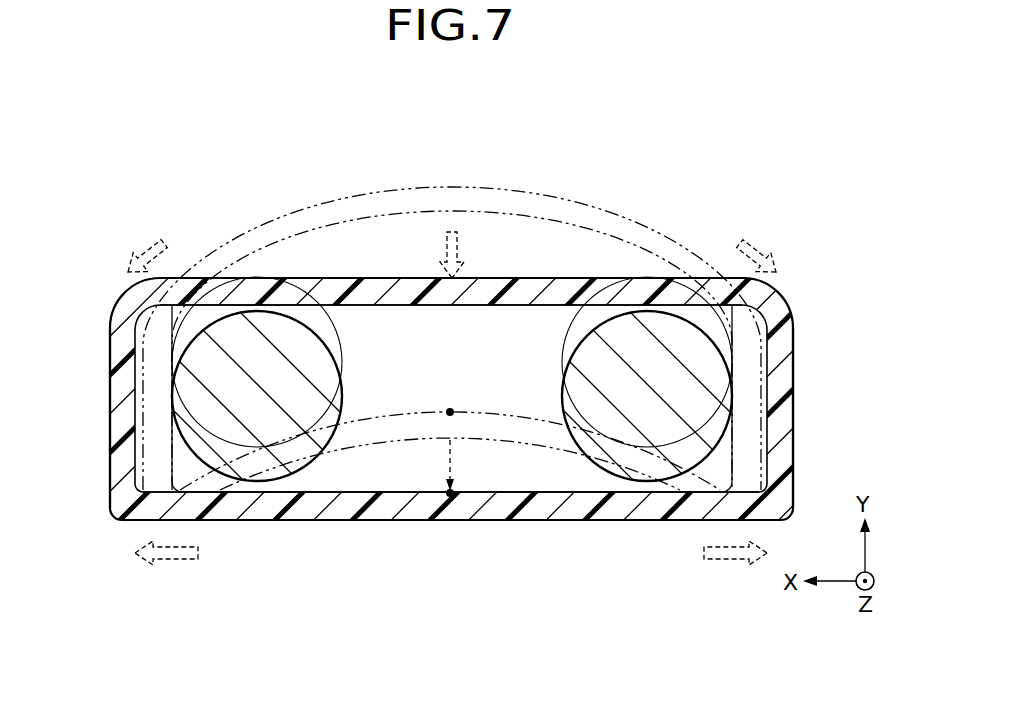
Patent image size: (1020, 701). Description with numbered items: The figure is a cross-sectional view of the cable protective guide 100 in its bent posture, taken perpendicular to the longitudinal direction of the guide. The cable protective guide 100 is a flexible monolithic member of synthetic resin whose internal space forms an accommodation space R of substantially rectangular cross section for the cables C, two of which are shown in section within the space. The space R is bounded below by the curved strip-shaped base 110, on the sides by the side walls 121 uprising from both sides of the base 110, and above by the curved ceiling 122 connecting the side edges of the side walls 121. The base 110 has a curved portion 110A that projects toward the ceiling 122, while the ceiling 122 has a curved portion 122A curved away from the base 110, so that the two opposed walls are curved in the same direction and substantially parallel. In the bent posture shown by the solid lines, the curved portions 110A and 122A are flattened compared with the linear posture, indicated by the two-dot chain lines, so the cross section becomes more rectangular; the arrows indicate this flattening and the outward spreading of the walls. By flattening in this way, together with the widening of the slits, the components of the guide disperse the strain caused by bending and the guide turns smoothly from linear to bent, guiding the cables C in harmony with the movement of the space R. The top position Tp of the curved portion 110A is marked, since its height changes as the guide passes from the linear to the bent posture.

The cable protective guide 100 is at (157, 138).
The curved strip-shaped base 110 is at (545, 517).
The curved portion of the base 110A is at (425, 510).
The side walls 121 is at (132, 397).
The curved ceiling 122 is at (548, 270).
The curved portion of the ceiling 122A is at (377, 205).
The cables C is at (325, 386).
The accommodation space R is at (457, 353).
The top position of the curved portion Tp is at (463, 439).